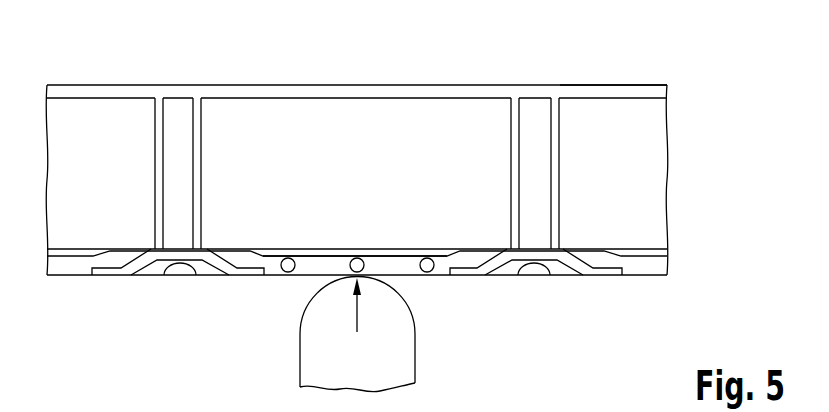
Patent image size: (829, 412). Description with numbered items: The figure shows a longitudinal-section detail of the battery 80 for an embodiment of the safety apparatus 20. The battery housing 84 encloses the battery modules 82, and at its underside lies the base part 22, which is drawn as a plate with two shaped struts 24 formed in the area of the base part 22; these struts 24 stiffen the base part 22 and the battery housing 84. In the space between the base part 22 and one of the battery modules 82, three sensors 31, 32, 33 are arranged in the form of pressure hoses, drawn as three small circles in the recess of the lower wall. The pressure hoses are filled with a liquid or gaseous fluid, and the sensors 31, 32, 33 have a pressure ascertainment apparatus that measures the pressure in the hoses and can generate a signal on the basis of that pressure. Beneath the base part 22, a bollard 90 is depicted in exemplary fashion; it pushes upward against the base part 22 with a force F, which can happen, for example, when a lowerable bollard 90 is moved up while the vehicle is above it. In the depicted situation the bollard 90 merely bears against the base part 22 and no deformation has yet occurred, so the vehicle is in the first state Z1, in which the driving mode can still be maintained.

The battery 80 is at (104, 67).
The battery housing 84 is at (302, 82).
The battery modules 82 is at (445, 110).
The first state Z1 is at (686, 61).
The struts 24 is at (138, 264).
The base part 22 is at (638, 278).
The sensors 31 is at (288, 266).
The sensor 32 is at (357, 266).
The sensor 33 is at (427, 266).
The safety apparatus 20 is at (278, 306).
The force F is at (358, 312).
The bollard 90 is at (400, 363).